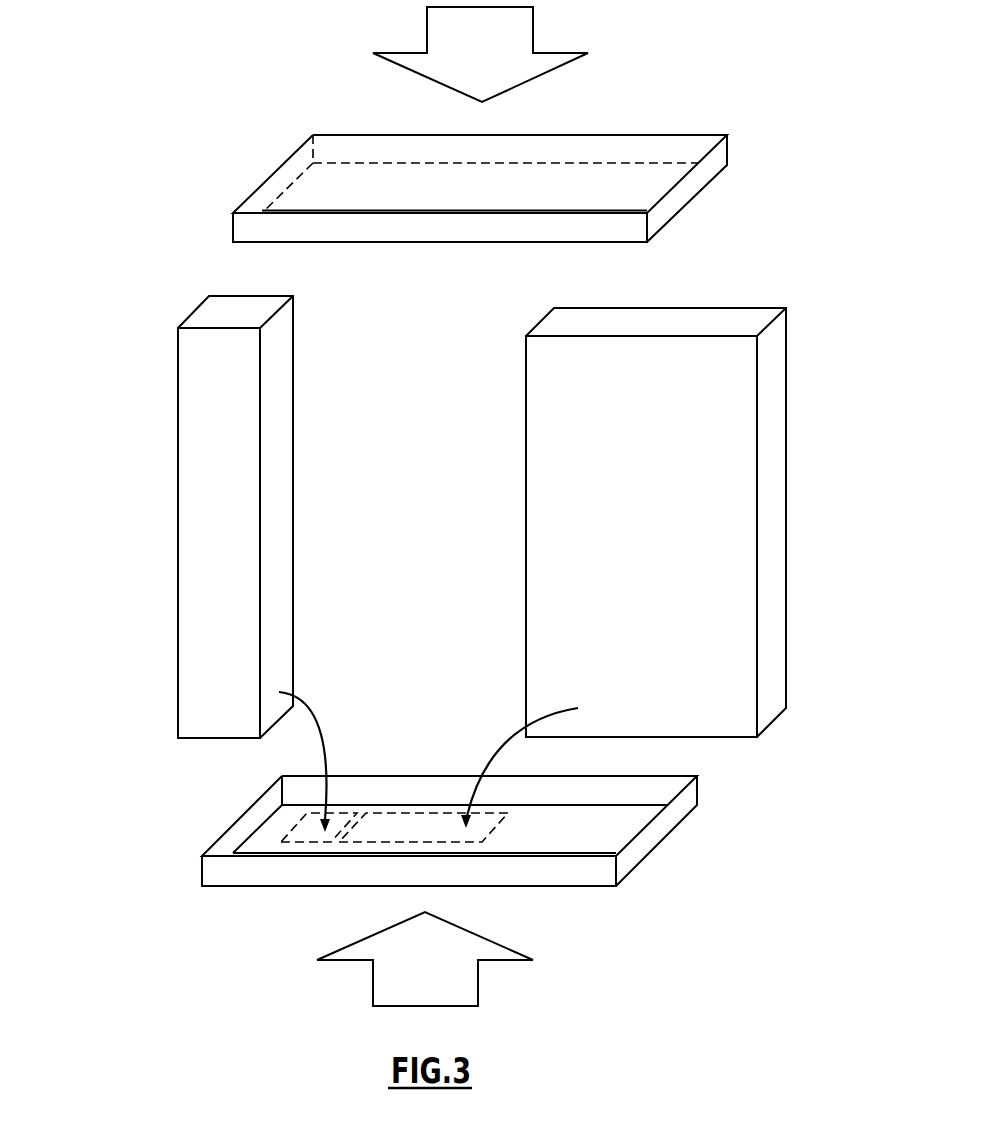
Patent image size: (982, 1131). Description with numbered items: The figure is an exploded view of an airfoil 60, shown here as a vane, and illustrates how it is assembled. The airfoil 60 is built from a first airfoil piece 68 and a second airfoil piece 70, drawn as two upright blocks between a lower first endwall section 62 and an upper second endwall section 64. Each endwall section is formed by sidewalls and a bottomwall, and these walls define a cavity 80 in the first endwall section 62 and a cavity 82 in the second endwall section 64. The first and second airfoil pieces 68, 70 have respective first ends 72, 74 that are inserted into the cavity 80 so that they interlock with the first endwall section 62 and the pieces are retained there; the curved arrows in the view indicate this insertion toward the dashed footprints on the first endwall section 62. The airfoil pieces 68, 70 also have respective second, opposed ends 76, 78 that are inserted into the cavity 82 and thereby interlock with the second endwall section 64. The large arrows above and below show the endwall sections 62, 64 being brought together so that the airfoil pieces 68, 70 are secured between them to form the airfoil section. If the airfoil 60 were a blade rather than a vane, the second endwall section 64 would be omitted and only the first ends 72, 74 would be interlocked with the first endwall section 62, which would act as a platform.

The airfoil 60 is at (83, 778).
The first endwall section 62 is at (653, 833).
The second endwall section 64 is at (693, 183).
The first airfoil piece 68 is at (195, 461).
The second airfoil piece 70 is at (734, 498).
The first end of first airfoil piece 72 is at (170, 720).
The first end of second airfoil piece 74 is at (781, 713).
The second end of first airfoil piece 76 is at (170, 339).
The second end of second airfoil piece 78 is at (782, 338).
The cavity 80 is at (590, 826).
The cavity 82 is at (420, 191).